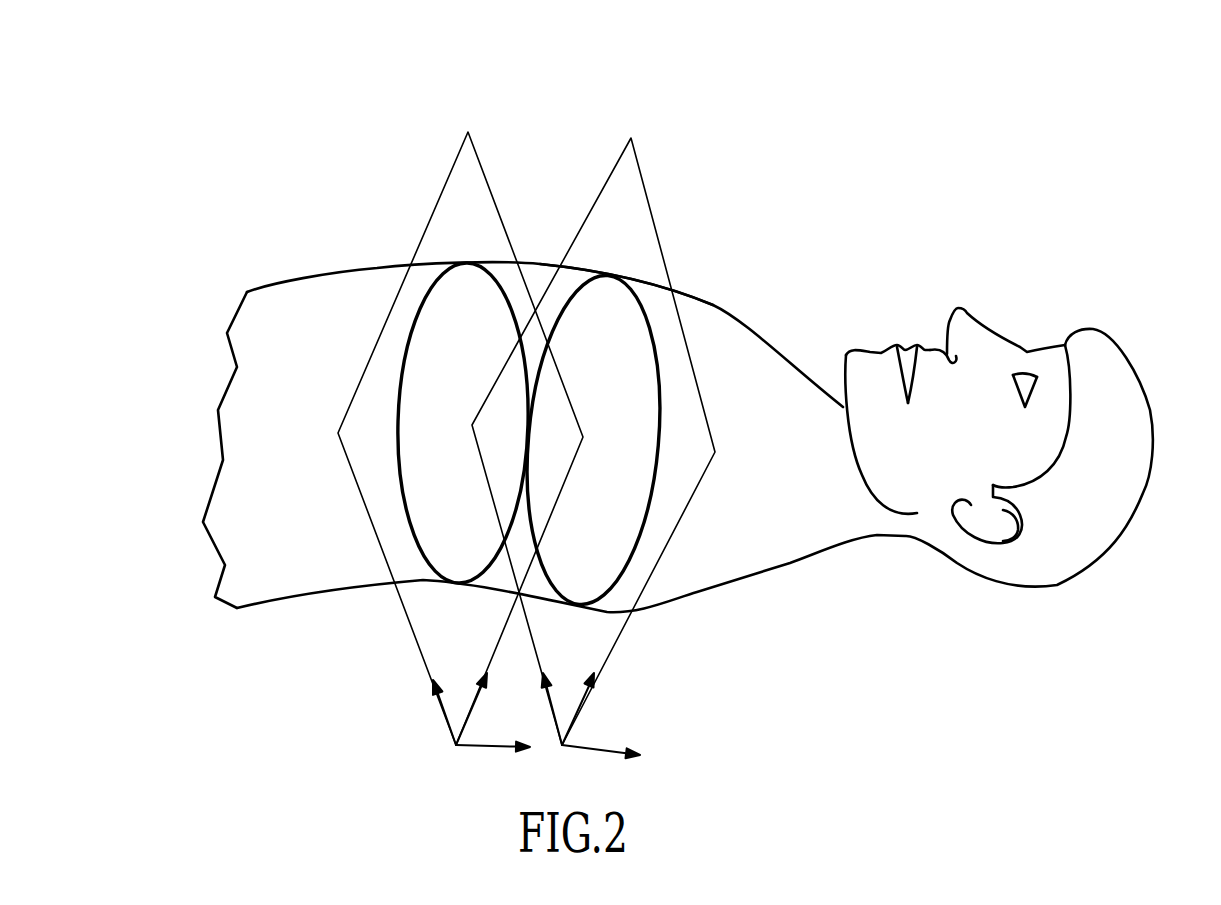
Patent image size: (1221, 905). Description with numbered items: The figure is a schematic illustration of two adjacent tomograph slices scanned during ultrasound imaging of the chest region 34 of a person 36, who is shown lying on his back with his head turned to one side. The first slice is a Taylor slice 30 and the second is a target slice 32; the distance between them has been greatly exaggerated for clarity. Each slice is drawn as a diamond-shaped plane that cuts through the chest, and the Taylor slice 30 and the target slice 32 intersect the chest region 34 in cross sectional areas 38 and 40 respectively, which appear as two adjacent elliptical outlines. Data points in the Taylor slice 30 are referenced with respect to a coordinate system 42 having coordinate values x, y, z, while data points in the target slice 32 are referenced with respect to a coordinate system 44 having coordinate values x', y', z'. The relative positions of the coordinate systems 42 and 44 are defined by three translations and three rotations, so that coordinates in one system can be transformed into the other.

The Taylor slice 30 is at (457, 157).
The target slice 32 is at (623, 147).
The chest region 34 is at (580, 266).
The person 36 is at (1087, 219).
The cross sectional area 38 is at (417, 317).
The cross sectional area 40 is at (660, 340).
The coordinate system 42 is at (447, 723).
The coordinate system 44 is at (578, 718).